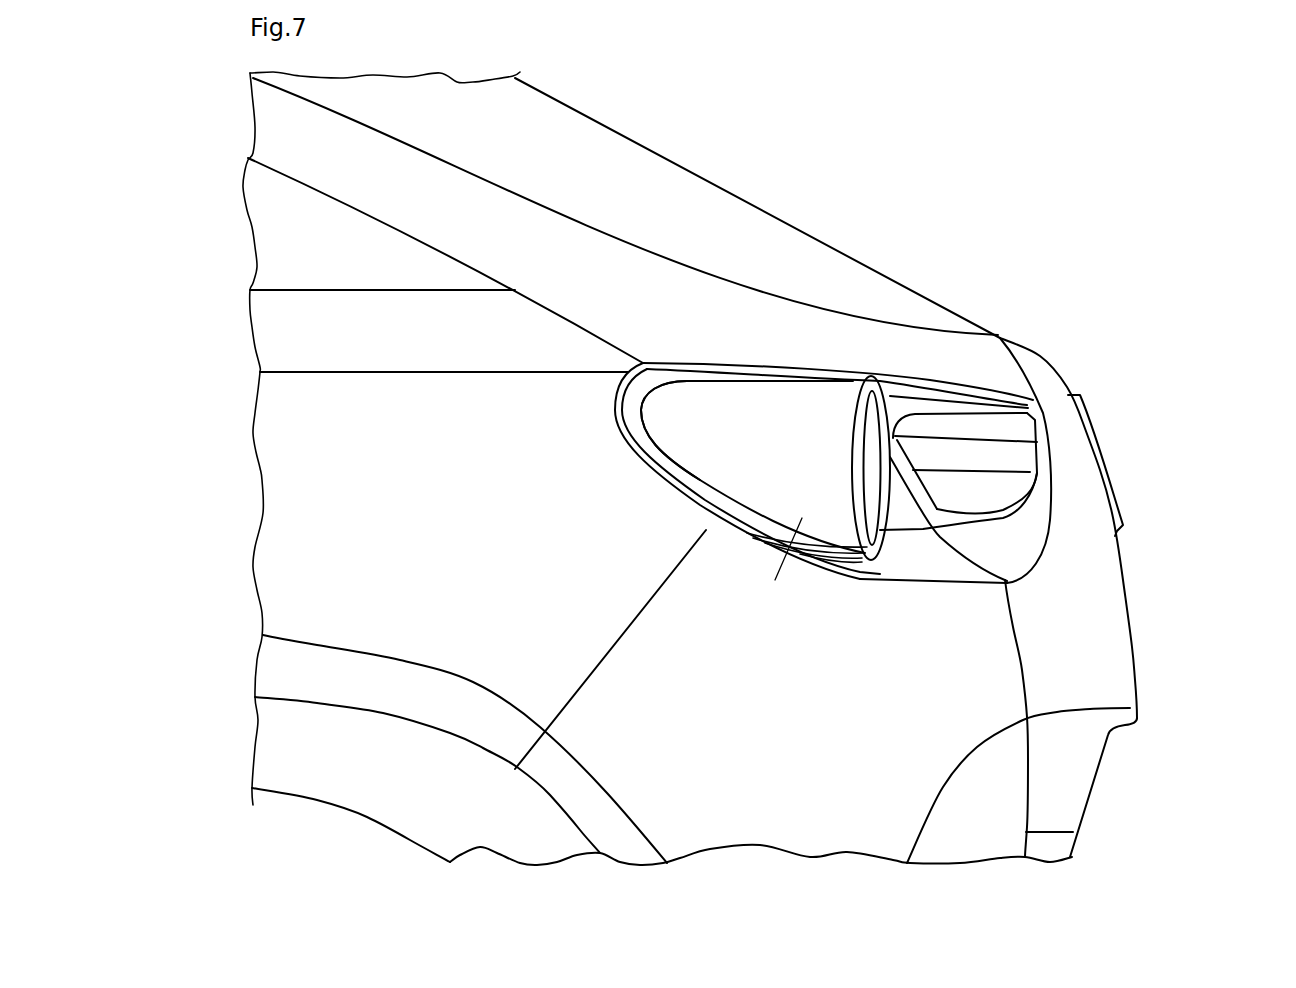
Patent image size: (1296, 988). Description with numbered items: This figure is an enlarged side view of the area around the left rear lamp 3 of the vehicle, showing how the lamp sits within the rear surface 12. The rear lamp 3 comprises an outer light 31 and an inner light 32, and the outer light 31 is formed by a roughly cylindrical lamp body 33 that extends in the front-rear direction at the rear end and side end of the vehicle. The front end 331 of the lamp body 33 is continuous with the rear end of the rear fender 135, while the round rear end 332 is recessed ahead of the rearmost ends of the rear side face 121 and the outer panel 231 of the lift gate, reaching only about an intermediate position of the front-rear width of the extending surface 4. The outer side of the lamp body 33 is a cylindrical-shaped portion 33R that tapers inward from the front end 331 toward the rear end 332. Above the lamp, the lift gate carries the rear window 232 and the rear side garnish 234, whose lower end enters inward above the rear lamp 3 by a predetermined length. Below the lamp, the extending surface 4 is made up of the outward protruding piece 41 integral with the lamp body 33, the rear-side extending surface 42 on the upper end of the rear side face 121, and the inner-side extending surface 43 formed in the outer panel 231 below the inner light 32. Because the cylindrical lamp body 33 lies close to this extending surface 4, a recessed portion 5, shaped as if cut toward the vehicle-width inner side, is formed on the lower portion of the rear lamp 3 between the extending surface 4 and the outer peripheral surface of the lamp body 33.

The rear lamp 3 is at (933, 238).
The outer light 31 is at (812, 400).
The inner light 32 is at (950, 410).
The lamp body 33 is at (760, 396).
The front end 331 is at (618, 425).
The rear end 332 is at (888, 516).
The cylindrical-shaped portion 33R is at (700, 463).
The extending surface 4 is at (963, 568).
The outward protruding piece 41 is at (740, 538).
The rear-side extending surface 42 is at (943, 582).
The inner-side extending surface 43 is at (1003, 545).
The recessed portion 5 is at (803, 516).
The rear surface 12 is at (1167, 342).
The rear side face 121 is at (833, 807).
The rear fender 135 is at (435, 625).
The outer panel 231 is at (1100, 573).
The rear window 232 is at (741, 218).
The rear side garnish 234 is at (530, 243).